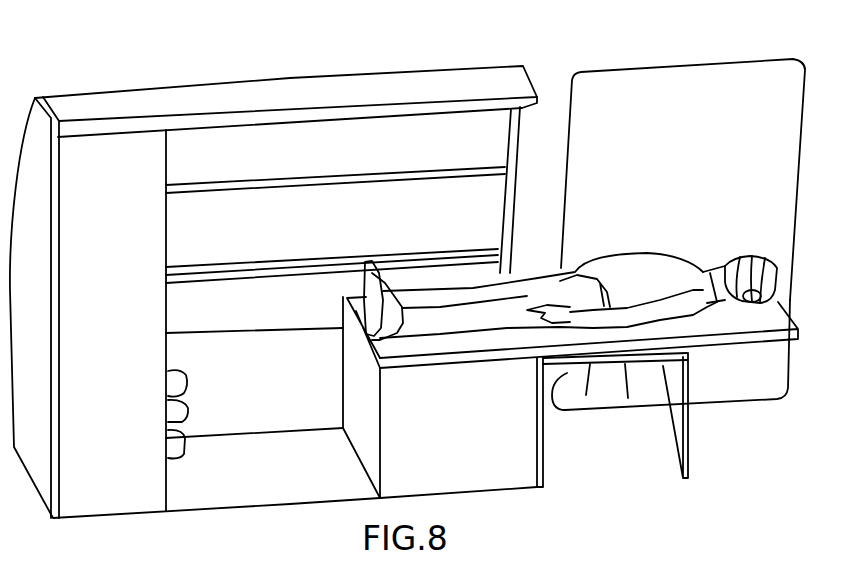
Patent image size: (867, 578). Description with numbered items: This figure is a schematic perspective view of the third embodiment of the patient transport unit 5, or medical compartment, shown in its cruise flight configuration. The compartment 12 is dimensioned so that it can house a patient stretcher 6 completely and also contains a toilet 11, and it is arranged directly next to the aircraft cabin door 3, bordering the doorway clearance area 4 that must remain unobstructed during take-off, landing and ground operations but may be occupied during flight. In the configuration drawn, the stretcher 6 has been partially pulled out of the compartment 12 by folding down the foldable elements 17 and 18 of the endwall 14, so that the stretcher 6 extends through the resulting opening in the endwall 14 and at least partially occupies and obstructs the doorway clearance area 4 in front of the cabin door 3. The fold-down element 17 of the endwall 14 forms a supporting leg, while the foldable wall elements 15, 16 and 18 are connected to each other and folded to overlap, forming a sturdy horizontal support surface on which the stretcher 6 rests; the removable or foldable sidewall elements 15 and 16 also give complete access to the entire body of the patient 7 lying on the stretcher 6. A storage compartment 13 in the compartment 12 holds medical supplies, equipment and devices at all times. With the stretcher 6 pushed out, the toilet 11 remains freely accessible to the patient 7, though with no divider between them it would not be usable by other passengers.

The cabin door 3 is at (700, 205).
The doorway clearance area 4 is at (773, 468).
The patient transport unit 5 is at (162, 78).
The patient stretcher 6 is at (787, 339).
The patient 7 is at (770, 283).
The toilet 11 is at (183, 396).
The compartment 12 is at (323, 90).
The storage compartment 13 is at (466, 443).
The endwall 14 is at (534, 82).
The sidewall element 15 is at (566, 375).
The sidewall element 16 is at (586, 395).
The foldable element 17 is at (686, 447).
The foldable element 18 is at (628, 398).